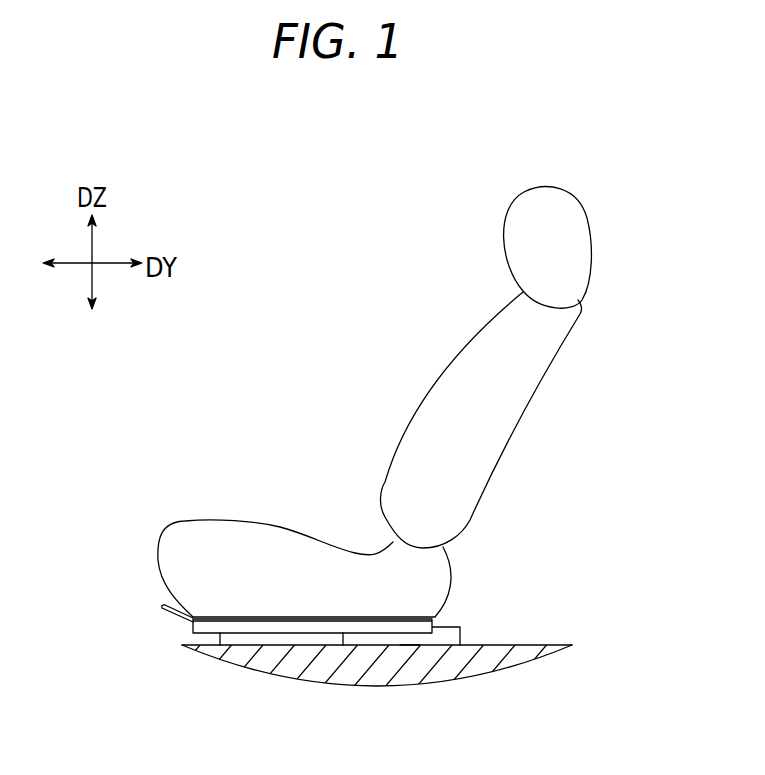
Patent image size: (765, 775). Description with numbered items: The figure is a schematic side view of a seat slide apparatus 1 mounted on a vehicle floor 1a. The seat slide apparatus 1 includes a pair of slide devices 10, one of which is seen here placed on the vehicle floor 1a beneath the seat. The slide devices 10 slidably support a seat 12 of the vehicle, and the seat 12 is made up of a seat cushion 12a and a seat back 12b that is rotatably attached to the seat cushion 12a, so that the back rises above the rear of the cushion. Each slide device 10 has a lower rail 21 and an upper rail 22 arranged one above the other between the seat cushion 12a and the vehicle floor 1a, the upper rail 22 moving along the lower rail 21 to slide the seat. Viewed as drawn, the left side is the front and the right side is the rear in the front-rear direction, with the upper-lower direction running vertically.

The seat slide apparatus 1 is at (570, 515).
The vehicle floor 1a is at (533, 645).
The slide device 10 is at (467, 606).
The seat 12 is at (586, 330).
The seat cushion 12a is at (246, 537).
The seat back 12b is at (512, 425).
The lower rail 21 is at (410, 647).
The upper rail 22 is at (344, 634).